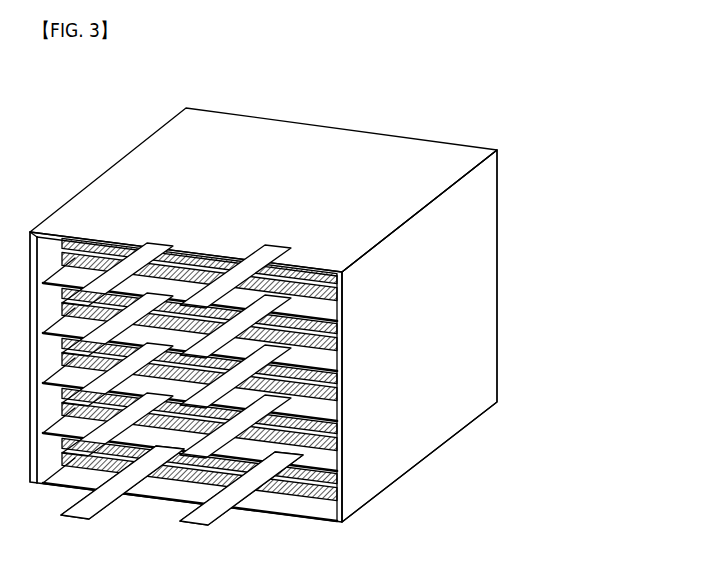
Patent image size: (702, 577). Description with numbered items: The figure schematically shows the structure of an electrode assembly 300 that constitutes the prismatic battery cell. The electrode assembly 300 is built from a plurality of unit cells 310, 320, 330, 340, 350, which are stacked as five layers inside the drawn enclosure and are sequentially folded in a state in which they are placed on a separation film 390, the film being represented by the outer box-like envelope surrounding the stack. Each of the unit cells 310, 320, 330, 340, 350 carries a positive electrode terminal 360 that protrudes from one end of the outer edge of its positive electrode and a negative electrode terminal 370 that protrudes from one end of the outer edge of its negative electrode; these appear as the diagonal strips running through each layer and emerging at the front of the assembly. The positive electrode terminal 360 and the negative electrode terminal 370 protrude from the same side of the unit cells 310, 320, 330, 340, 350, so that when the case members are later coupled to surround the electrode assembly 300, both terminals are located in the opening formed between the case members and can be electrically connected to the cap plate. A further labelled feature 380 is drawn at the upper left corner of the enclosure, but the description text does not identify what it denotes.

The electrode assembly 300 is at (98, 124).
The unit cell 310 is at (322, 300).
The unit cell 320 is at (322, 350).
The unit cell 330 is at (322, 400).
The unit cell 340 is at (322, 452).
The unit cell 350 is at (322, 500).
The positive electrode terminal 360 is at (90, 518).
The negative electrode terminal 370 is at (207, 523).
The side wall 380 is at (72, 243).
The separation film 390 is at (464, 162).